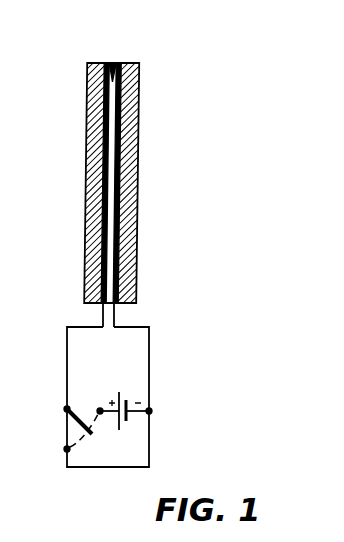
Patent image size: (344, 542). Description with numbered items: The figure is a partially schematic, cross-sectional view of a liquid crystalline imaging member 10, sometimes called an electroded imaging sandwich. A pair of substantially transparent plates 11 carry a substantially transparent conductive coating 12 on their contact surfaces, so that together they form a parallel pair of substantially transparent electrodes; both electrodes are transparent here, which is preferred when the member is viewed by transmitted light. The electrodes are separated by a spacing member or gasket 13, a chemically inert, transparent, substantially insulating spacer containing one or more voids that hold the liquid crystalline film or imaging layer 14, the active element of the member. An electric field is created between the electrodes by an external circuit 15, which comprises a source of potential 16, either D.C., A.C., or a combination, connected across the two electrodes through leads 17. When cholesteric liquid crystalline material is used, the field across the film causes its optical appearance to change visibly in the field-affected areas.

The liquid crystalline imaging member 10 is at (166, 236).
The substantially transparent plates 11 is at (87, 140).
The substantially transparent conductive coating 12 is at (105, 63).
The spacing member or gasket 13 is at (101, 306).
The liquid crystalline film or imaging layer 14 is at (104, 218).
The external circuit 15 is at (149, 443).
The source of potential 16 is at (124, 426).
The leads 17 is at (118, 320).